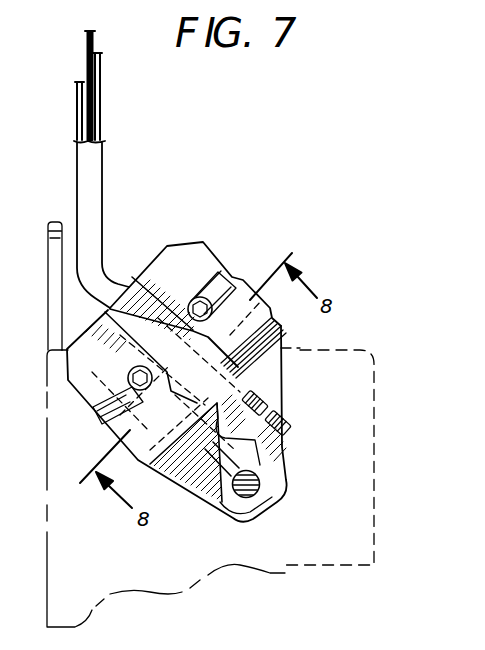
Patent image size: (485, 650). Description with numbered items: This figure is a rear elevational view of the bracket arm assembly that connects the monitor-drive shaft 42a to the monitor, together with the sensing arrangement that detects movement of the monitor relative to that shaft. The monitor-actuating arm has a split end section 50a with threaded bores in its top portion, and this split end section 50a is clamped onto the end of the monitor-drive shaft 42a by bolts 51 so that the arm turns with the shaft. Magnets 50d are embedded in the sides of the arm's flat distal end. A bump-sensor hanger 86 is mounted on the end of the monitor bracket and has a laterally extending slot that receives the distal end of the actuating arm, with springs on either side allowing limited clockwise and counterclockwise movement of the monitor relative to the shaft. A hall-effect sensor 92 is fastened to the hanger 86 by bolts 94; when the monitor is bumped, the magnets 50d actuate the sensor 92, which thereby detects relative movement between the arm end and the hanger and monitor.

The hall-effect sensor 92 is at (208, 243).
The bolts 94 is at (233, 279).
The magnets 50d is at (148, 268).
The bolts 51 is at (284, 410).
The monitor-drive shaft 42a is at (258, 491).
The bump-sensor hanger 86 is at (281, 348).
The split end section 50a is at (290, 472).